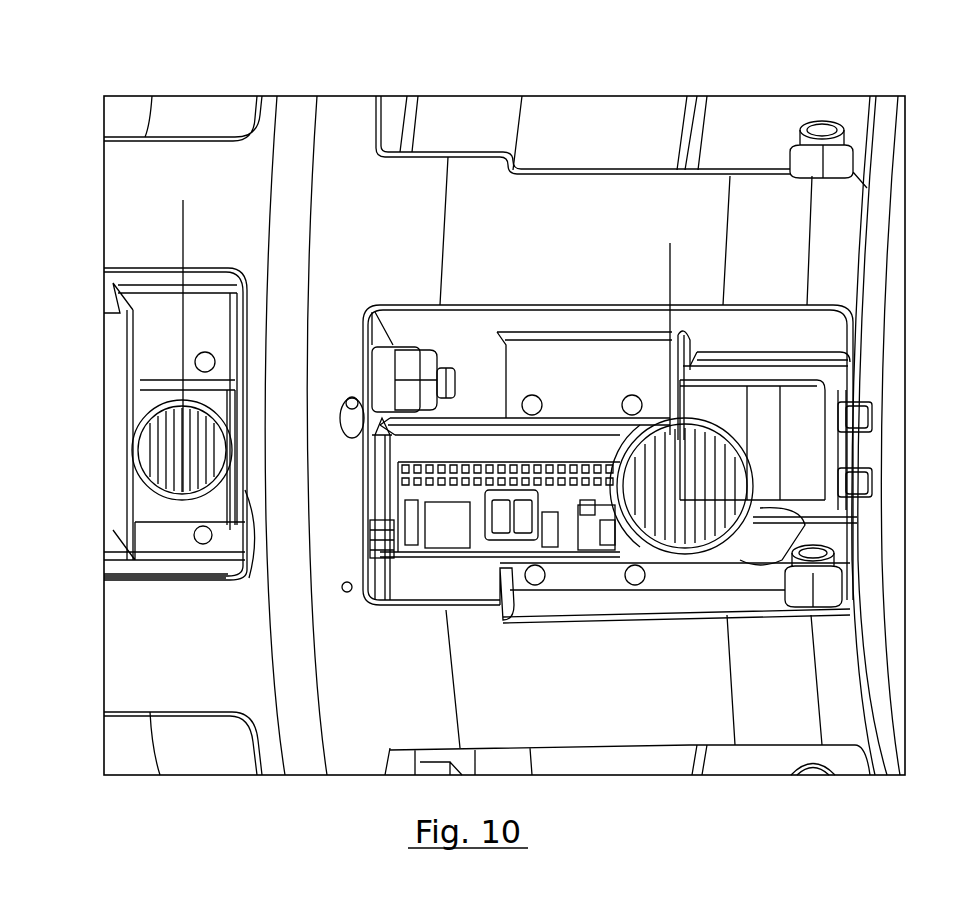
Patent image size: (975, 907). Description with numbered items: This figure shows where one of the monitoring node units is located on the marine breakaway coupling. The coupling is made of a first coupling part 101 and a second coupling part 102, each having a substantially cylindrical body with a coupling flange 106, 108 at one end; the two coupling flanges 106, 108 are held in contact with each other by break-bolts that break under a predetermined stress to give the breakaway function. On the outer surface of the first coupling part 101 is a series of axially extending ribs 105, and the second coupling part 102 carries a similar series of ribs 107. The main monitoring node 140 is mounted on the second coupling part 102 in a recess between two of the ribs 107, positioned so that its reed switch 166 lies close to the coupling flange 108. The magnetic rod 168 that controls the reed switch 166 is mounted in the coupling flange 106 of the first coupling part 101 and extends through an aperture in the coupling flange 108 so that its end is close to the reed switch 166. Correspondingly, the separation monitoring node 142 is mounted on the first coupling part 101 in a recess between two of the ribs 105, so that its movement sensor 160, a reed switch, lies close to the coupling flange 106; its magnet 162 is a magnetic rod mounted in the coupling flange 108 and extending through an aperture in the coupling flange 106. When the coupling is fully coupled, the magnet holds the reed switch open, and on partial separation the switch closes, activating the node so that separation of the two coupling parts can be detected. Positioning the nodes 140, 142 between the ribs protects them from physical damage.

The first coupling part 101 is at (225, 115).
The second coupling part 102 is at (452, 122).
The ribs 105 is at (128, 190).
The coupling flange 106 is at (296, 128).
The ribs 107 is at (632, 198).
The coupling flange 108 is at (355, 122).
The main monitoring node 140 is at (580, 435).
The separation monitoring node 142 is at (163, 397).
The movement sensor 160 is at (223, 583).
The magnet 162 is at (258, 572).
The reed switch 166 is at (398, 560).
The magnetic rod 168 is at (365, 538).